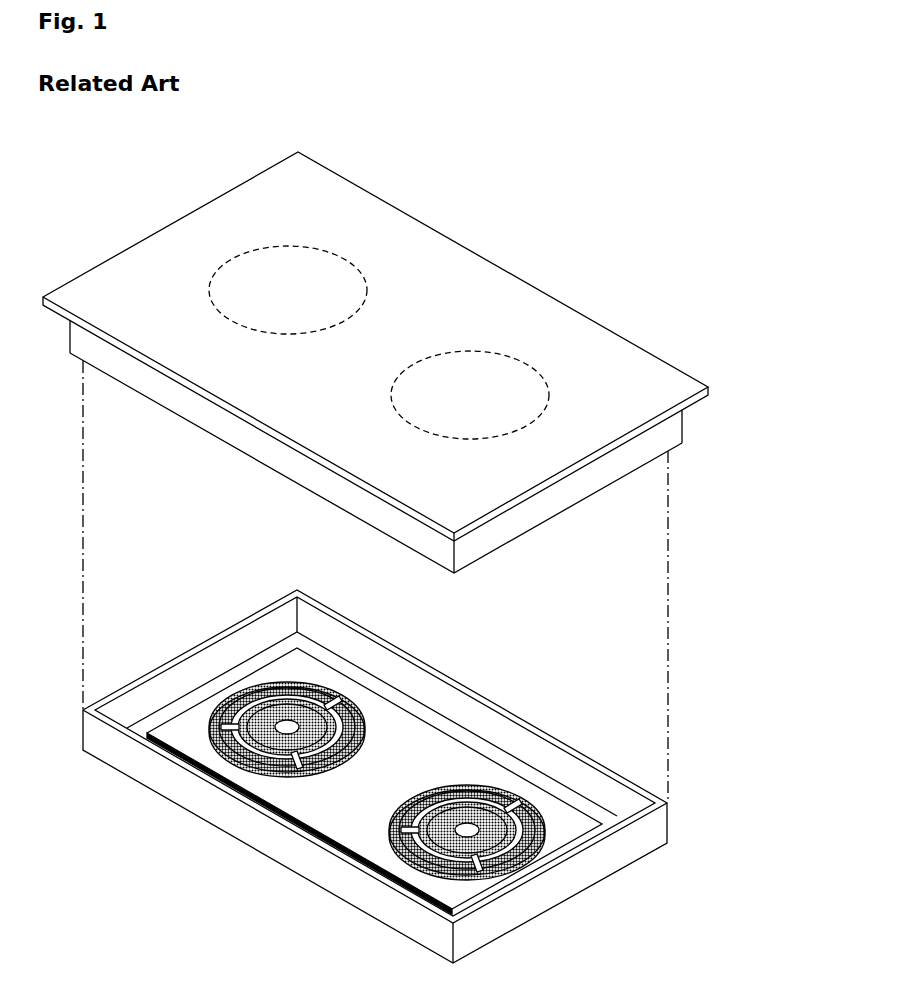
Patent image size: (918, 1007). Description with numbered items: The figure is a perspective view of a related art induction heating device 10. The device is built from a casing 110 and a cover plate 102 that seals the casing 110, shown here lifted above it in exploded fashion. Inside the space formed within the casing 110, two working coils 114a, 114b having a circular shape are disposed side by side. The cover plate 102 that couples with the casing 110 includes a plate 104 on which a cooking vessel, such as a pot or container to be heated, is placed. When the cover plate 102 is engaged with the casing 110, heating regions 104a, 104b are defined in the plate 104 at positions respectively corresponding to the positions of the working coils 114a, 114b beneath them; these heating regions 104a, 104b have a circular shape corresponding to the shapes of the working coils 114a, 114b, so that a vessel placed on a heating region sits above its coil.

The induction heating device 10 is at (470, 222).
The cover plate 102 is at (683, 428).
The plate 104 is at (608, 366).
The heating region 104a is at (260, 247).
The heating region 104b is at (503, 354).
The casing 110 is at (668, 824).
The working coil 114a is at (244, 766).
The working coil 114b is at (420, 868).